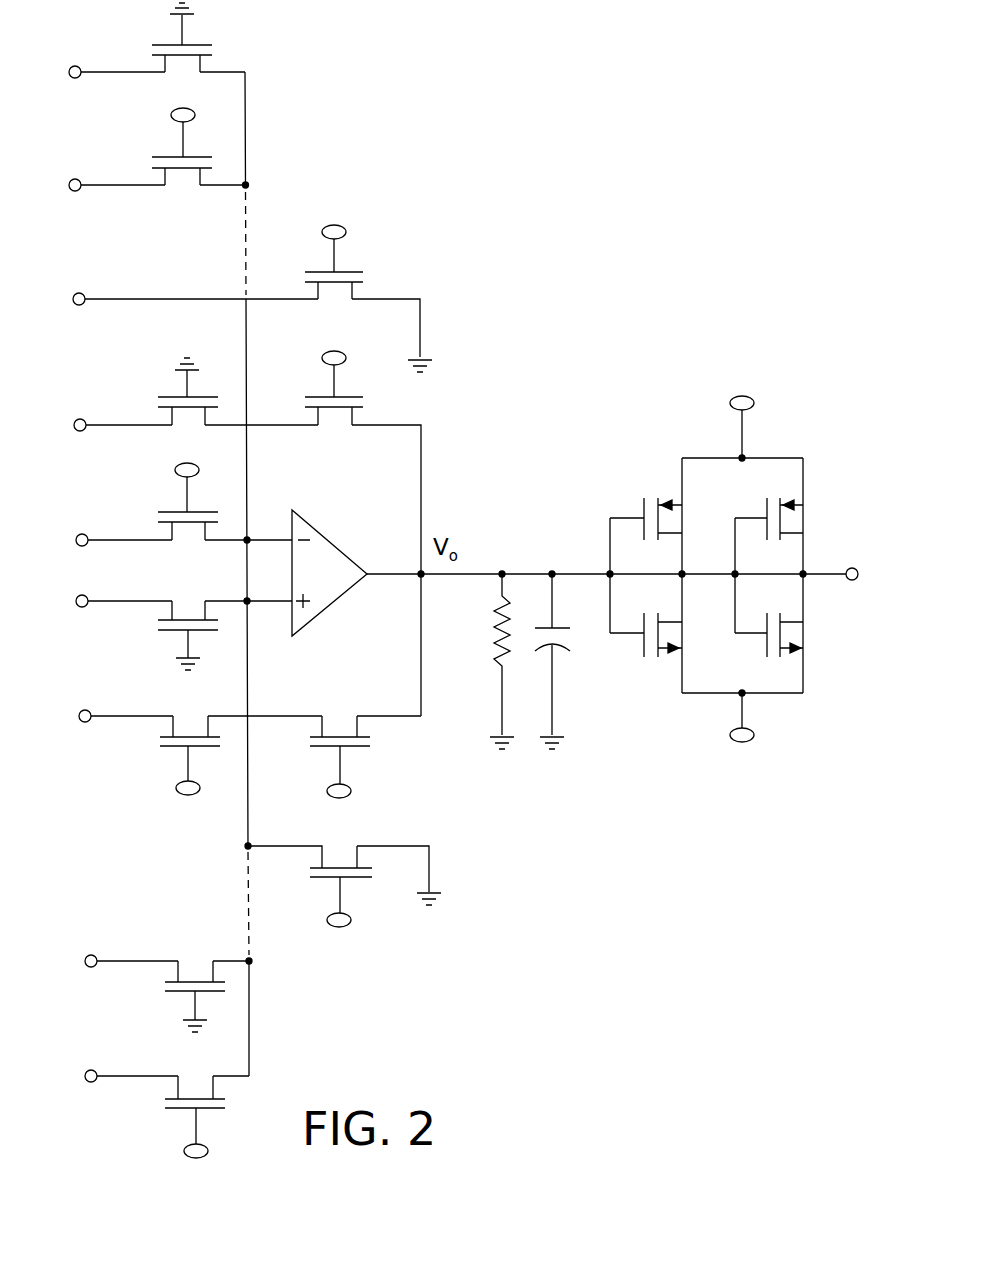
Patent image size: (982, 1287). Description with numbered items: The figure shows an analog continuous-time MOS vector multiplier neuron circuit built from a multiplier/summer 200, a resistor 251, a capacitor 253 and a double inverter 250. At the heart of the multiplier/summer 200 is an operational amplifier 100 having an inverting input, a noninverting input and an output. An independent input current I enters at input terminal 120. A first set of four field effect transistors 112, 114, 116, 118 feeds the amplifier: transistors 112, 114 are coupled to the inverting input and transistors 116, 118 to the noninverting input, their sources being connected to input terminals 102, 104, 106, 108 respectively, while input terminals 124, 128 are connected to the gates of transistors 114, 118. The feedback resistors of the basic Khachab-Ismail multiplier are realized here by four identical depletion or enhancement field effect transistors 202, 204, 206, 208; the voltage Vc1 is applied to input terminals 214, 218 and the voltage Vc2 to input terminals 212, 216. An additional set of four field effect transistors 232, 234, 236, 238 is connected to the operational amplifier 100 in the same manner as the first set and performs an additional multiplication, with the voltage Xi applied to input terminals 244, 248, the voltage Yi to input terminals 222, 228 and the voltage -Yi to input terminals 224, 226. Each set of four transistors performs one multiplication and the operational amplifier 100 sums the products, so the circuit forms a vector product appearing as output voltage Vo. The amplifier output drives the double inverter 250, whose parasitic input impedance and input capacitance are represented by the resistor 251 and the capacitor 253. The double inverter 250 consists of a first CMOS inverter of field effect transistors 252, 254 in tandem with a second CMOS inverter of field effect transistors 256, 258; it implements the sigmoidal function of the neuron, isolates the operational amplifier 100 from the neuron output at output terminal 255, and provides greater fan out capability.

The operational amplifier 100 is at (330, 564).
The input terminal 102 is at (148, 424).
The input terminal 104 is at (170, 538).
The input terminal 106 is at (170, 584).
The input terminal 108 is at (186, 711).
The field effect transistor 112 is at (166, 391).
The field effect transistor 114 is at (169, 522).
The field effect transistor 116 is at (168, 635).
The field effect transistor 118 is at (169, 748).
The input terminal 120 is at (185, 288).
The input terminal 124 is at (164, 470).
The input terminal 128 is at (166, 805).
The multiplier/summer 200 is at (480, 248).
The field effect transistor 202 is at (344, 318).
The field effect transistor 204 is at (334, 553).
The field effect transistor 206 is at (339, 750).
The field effect transistor 208 is at (344, 879).
The input terminal 212 is at (320, 234).
The input terminal 214 is at (320, 360).
The input terminal 216 is at (330, 806).
The input terminal 218 is at (328, 937).
The input terminal 222 is at (145, 68).
The input terminal 224 is at (145, 182).
The input terminal 226 is at (150, 957).
The input terminal 228 is at (154, 1072).
The field effect transistor 232 is at (160, 37).
The field effect transistor 234 is at (160, 168).
The field effect transistor 236 is at (171, 996).
The field effect transistor 238 is at (171, 1110).
The input terminal 244 is at (156, 115).
The input terminal 248 is at (168, 1166).
The double inverter 250 is at (680, 400).
The resistor 251 is at (482, 661).
The field effect transistor 252 is at (646, 503).
The capacitor 253 is at (567, 661).
The field effect transistor 254 is at (646, 620).
The output terminal 255 is at (842, 563).
The field effect transistor 256 is at (764, 503).
The field effect transistor 258 is at (769, 620).